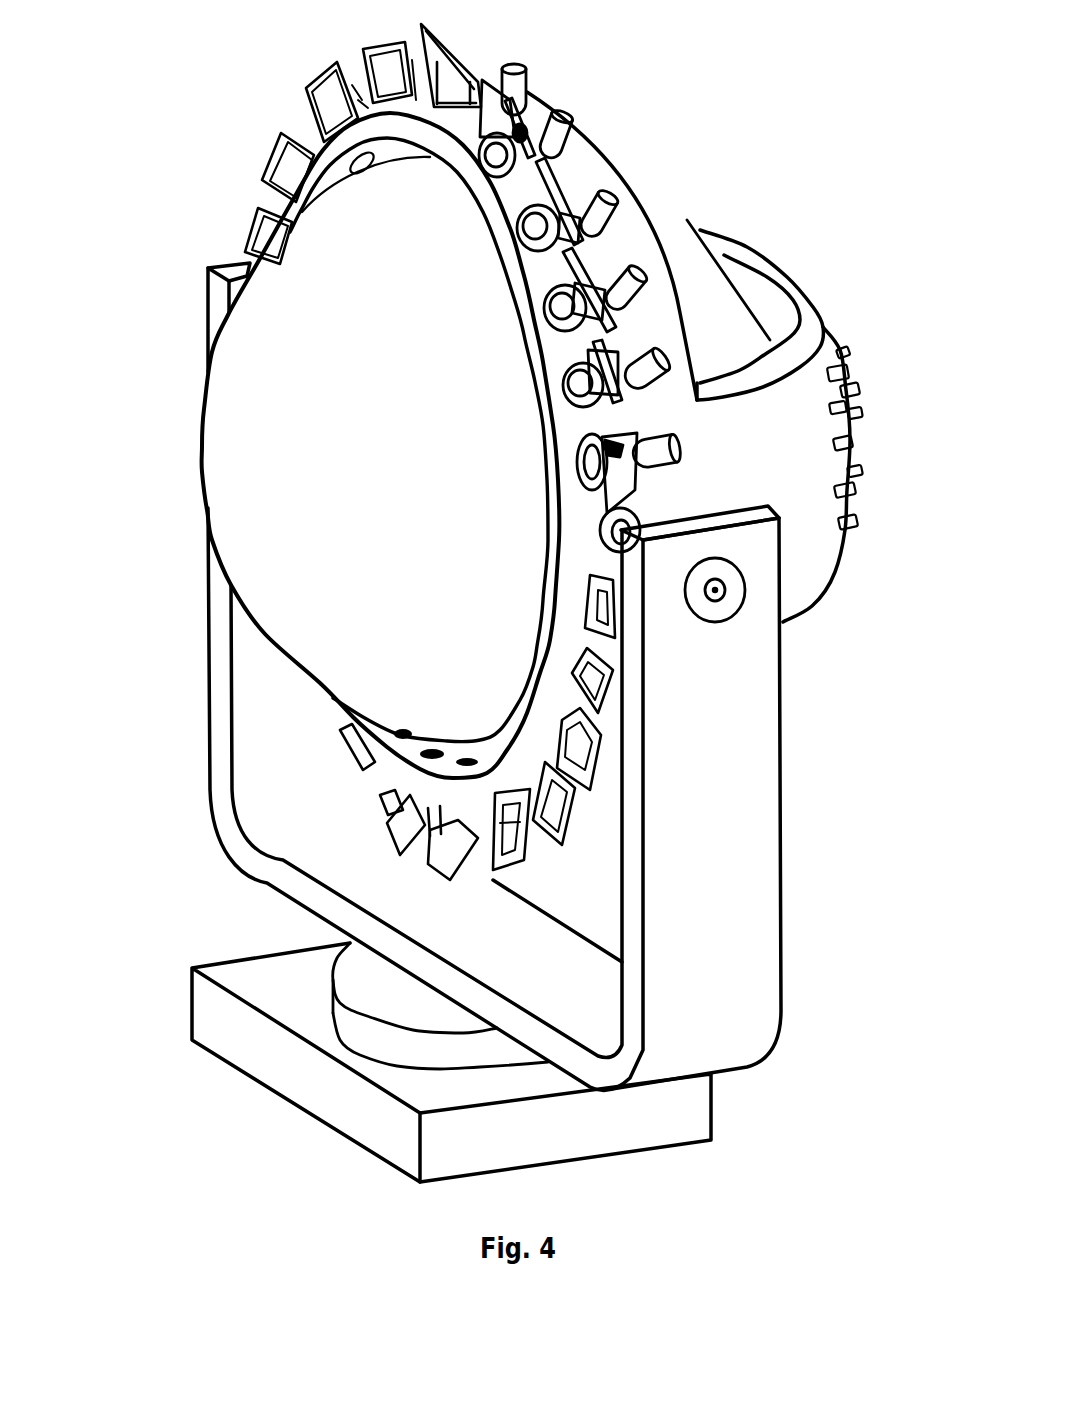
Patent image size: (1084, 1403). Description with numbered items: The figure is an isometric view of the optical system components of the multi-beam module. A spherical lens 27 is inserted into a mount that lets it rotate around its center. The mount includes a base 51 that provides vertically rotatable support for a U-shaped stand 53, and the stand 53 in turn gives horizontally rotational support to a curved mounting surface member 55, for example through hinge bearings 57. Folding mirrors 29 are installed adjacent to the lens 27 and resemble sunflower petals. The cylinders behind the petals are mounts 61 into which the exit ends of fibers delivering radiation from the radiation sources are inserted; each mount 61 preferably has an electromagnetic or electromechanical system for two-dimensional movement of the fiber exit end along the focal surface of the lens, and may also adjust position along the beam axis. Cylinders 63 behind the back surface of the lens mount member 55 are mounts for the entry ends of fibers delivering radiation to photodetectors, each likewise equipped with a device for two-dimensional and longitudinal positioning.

The spherical lens 27 is at (187, 462).
The folding mirrors 29 is at (484, 35).
The base 51 is at (181, 993).
The U-shaped stand 53 is at (810, 888).
The curved mounting surface member 55 is at (781, 248).
The hinge bearings 57 is at (813, 621).
The mounts 61 is at (542, 68).
The mounts 63 is at (848, 344).